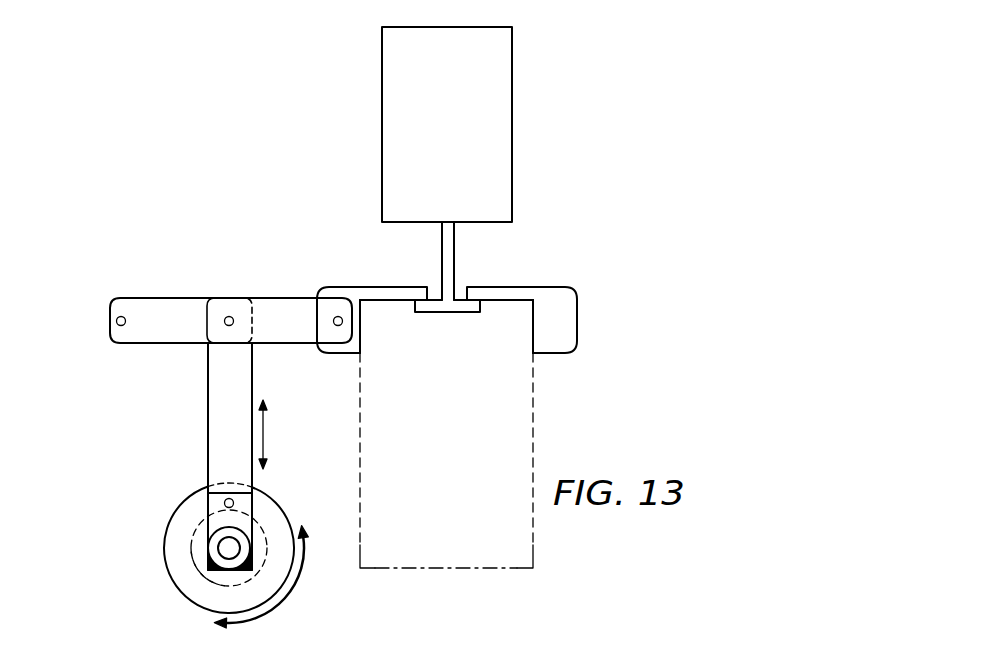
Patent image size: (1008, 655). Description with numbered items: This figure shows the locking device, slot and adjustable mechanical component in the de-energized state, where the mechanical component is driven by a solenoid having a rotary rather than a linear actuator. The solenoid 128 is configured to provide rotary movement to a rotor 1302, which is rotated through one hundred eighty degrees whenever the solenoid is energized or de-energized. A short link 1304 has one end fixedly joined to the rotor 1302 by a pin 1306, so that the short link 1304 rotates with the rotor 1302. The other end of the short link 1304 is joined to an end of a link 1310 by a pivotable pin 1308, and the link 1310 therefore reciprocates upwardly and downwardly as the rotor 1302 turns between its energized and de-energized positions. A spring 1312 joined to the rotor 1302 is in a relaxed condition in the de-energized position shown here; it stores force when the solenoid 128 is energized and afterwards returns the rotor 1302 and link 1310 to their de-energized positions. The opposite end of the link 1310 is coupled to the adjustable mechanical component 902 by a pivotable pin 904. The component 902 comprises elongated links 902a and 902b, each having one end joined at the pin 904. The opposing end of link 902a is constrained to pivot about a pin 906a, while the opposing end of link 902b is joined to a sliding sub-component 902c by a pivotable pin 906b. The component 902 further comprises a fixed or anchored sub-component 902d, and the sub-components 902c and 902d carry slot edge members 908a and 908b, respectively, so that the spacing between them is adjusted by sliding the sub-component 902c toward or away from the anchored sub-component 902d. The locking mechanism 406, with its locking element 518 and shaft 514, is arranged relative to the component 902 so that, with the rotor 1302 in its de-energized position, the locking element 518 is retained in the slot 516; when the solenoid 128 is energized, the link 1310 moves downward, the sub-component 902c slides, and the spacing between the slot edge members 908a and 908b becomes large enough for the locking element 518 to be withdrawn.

The locking mechanism 406 is at (468, 138).
The shaft 514 is at (441, 263).
The locking element 518 is at (435, 313).
The slot 516 is at (467, 477).
The adjustable mechanical component 902 is at (226, 231).
The elongated link 902a is at (163, 343).
The elongated link 902b is at (282, 343).
The sliding sub-component 902c is at (345, 353).
The anchored sub-component 902d is at (577, 322).
The pivotable pin 904 is at (226, 316).
The pin 906a is at (116, 322).
The pivotable pin 906b is at (333, 320).
The slot edge member 908a is at (390, 301).
The slot edge member 908b is at (503, 301).
The link 1310 is at (207, 426).
The short link 1304 is at (211, 504).
The rotor 1302 is at (207, 522).
The pin 1306 is at (229, 559).
The pivotable pin 1308 is at (234, 503).
The solenoid 128 is at (191, 549).
The spring 1312 is at (197, 568).